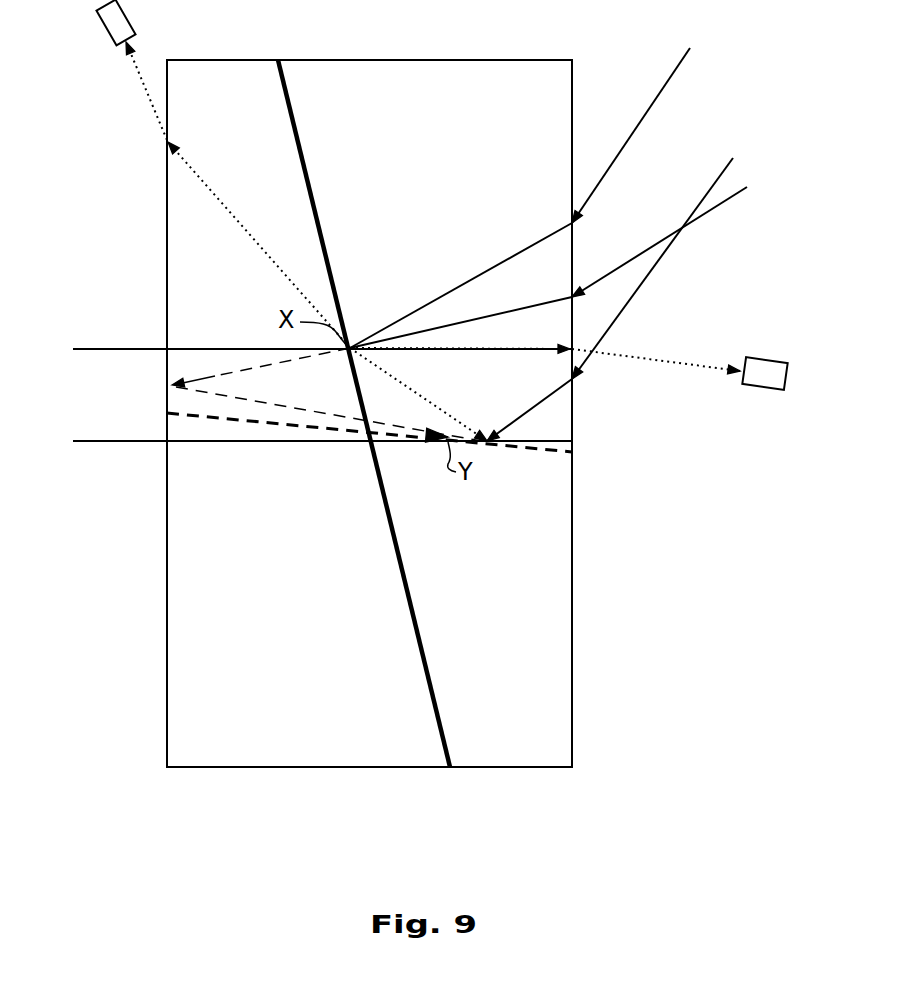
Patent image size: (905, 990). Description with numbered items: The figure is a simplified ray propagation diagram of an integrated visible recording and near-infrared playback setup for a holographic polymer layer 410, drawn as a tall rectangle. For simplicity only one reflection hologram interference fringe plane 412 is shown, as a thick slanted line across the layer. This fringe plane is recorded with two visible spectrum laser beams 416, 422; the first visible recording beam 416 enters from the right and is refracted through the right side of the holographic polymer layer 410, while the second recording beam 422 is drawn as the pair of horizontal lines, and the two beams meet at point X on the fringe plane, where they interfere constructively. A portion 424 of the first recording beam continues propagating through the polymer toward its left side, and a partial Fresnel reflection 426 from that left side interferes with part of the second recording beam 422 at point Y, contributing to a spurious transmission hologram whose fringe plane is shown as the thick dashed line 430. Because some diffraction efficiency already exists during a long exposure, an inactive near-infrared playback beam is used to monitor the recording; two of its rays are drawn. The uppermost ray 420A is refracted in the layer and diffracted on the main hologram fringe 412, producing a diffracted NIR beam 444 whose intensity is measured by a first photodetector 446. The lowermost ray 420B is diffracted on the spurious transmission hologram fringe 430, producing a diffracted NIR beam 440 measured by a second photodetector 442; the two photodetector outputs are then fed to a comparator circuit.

The holographic polymer layer 410 is at (369, 413).
The reflection hologram interference fringe plane 412 is at (407, 606).
The first visible spectrum recording laser beam 416 is at (737, 200).
The uppermost NIR playback ray 420A is at (648, 120).
The lowermost NIR playback ray 420B is at (727, 166).
The second visible spectrum recording laser beam 422 is at (118, 349).
The portion of the first recording beam 424 is at (208, 378).
The partial Fresnel reflection 426 is at (266, 406).
The spurious transmission hologram fringe plane 430 is at (190, 416).
The NIR beam diffracted from the transmission hologram fringe 440 is at (144, 91).
The second photodetector 442 is at (98, 21).
The NIR beam diffracted from the reflection hologram fringe 444 is at (520, 351).
The first photodetector 446 is at (763, 389).